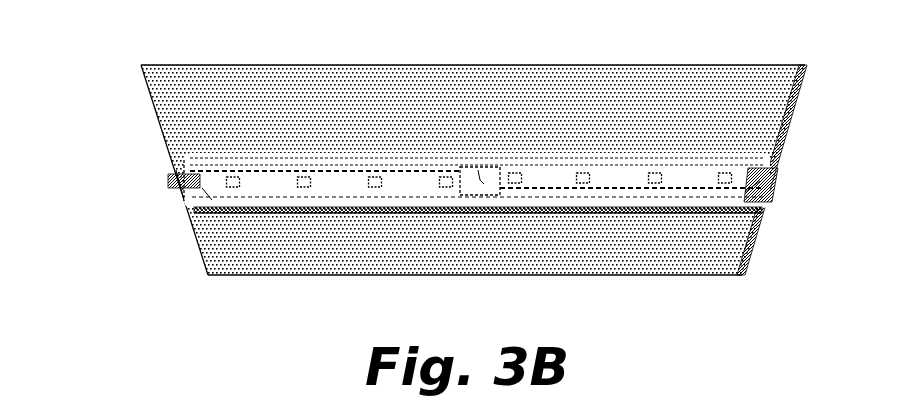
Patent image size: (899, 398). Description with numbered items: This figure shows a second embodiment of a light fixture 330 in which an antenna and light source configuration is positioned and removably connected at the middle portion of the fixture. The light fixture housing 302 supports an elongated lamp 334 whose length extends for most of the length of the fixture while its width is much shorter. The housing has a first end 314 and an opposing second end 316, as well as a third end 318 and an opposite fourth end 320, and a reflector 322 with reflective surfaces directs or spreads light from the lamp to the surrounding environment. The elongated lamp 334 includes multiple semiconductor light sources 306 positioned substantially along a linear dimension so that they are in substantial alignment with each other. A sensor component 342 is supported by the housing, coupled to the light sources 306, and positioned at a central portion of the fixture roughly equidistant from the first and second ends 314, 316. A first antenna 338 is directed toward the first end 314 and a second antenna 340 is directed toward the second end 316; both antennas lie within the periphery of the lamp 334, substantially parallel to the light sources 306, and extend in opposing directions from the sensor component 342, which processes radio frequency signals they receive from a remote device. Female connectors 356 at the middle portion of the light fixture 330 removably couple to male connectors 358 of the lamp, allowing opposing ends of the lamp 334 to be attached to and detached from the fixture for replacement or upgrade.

The light fixture 330 is at (130, 42).
The light fixture housing 302 is at (175, 118).
The third end 318 is at (420, 63).
The second end 316 is at (760, 181).
The elongated lamp 334 is at (183, 170).
The first antenna 338 is at (326, 172).
The second antenna 340 is at (627, 192).
The sensor component 342 is at (472, 166).
The semiconductor light sources 306 is at (519, 172).
The fourth end 320 is at (441, 274).
The reflector 322 is at (525, 83).
The female connectors 356 is at (158, 185).
The first end 314 is at (187, 200).
The male connectors 358 is at (212, 200).